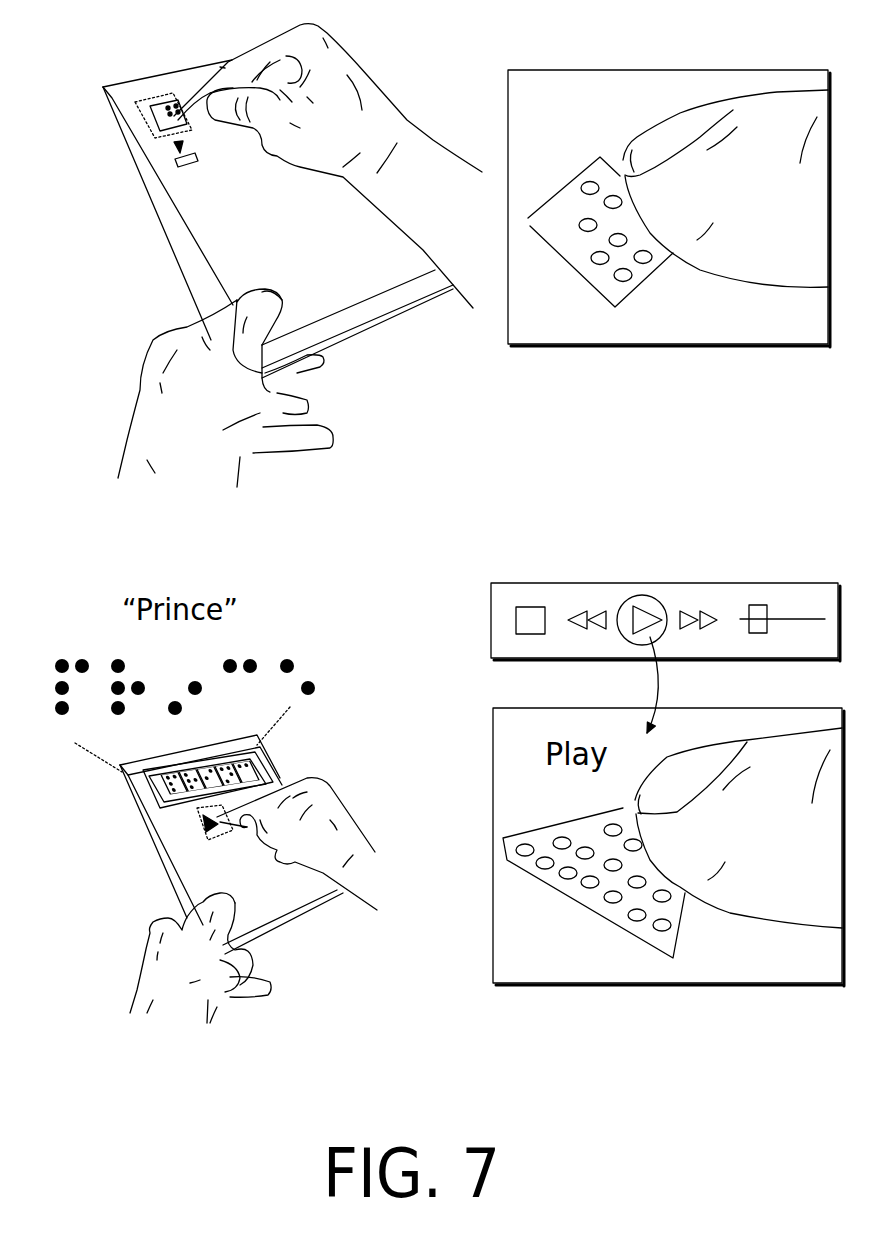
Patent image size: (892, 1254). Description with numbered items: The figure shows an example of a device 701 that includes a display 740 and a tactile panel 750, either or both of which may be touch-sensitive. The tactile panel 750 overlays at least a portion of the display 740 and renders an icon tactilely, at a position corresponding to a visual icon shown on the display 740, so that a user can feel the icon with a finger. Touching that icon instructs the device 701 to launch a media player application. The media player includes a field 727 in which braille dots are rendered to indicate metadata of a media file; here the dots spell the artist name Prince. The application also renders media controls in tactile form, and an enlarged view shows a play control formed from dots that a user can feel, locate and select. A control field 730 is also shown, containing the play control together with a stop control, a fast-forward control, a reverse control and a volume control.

The device 701 is at (168, 31).
The field 727 is at (157, 798).
The control field 730 is at (580, 583).
The display 740 is at (200, 178).
The tactile panel 750 is at (138, 101).